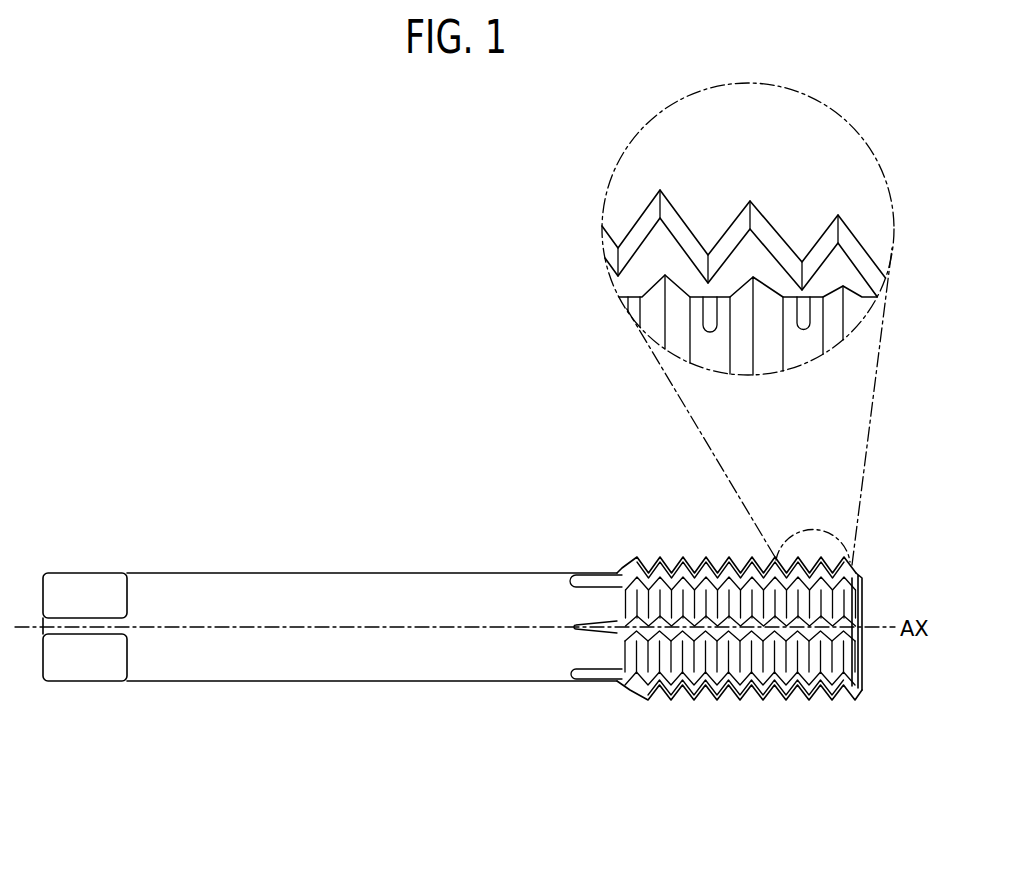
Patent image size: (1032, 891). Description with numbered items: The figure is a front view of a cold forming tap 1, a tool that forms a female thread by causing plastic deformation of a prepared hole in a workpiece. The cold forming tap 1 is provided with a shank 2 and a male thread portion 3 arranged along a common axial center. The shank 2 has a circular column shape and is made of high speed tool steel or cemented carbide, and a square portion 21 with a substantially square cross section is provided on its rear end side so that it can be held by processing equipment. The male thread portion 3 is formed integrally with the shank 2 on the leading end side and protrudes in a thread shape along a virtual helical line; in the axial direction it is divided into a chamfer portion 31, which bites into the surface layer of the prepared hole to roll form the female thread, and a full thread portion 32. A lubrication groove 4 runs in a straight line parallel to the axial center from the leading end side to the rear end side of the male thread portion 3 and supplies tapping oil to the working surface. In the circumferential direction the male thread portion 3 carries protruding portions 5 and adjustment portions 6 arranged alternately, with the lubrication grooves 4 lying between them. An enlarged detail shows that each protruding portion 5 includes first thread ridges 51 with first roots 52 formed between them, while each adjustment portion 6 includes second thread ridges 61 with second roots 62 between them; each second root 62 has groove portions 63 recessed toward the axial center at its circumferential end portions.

The cold forming tap 1 is at (381, 462).
The shank 2 is at (136, 550).
The square portion 21 is at (85, 595).
The male thread portion 3 is at (840, 812).
The chamfer portion 31 is at (835, 713).
The full thread portion 32 is at (688, 713).
The lubrication groove 4 is at (583, 667).
The protruding portion 5 is at (858, 213).
The first thread ridge 51 is at (750, 190).
The first root 52 is at (710, 255).
The adjustment portion 6 is at (852, 307).
The second thread ridge 61 is at (763, 332).
The second root 62 is at (805, 348).
The groove portion 63 is at (808, 315).